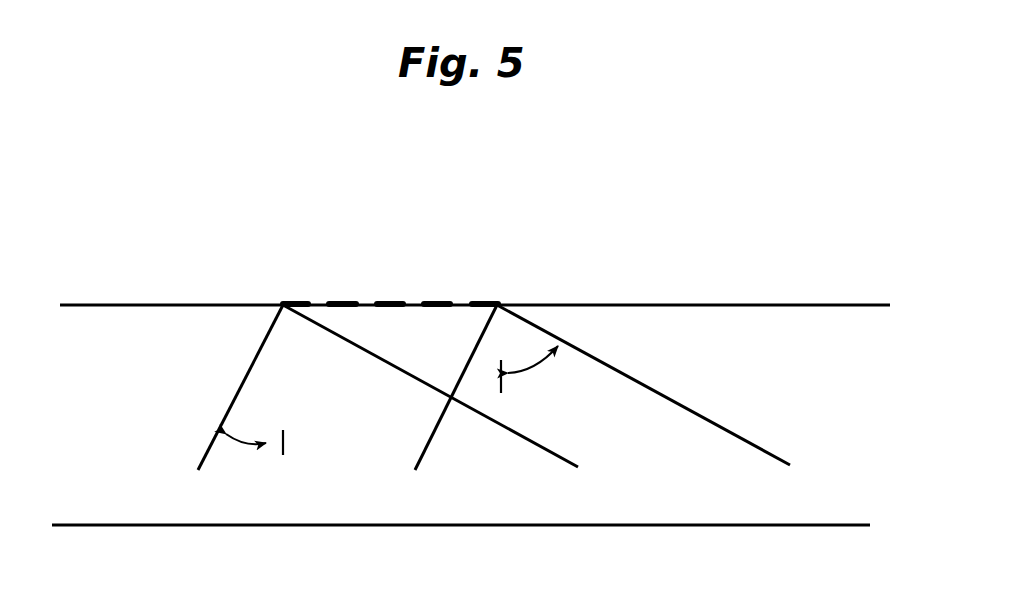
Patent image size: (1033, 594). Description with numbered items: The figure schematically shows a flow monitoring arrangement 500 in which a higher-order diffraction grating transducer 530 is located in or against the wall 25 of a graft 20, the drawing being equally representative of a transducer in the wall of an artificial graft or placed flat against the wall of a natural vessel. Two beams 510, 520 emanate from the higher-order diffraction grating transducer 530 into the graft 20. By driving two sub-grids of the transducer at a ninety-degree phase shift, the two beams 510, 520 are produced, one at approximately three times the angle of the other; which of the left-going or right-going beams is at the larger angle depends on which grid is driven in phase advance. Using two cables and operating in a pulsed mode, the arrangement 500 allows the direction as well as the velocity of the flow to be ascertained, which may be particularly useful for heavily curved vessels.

The arrangement 500 is at (148, 190).
The wall 25 is at (660, 304).
The graft 20 is at (133, 510).
The higher-order diffraction grating transducer 530 is at (392, 304).
The beam 510 is at (345, 440).
The beam 520 is at (651, 456).